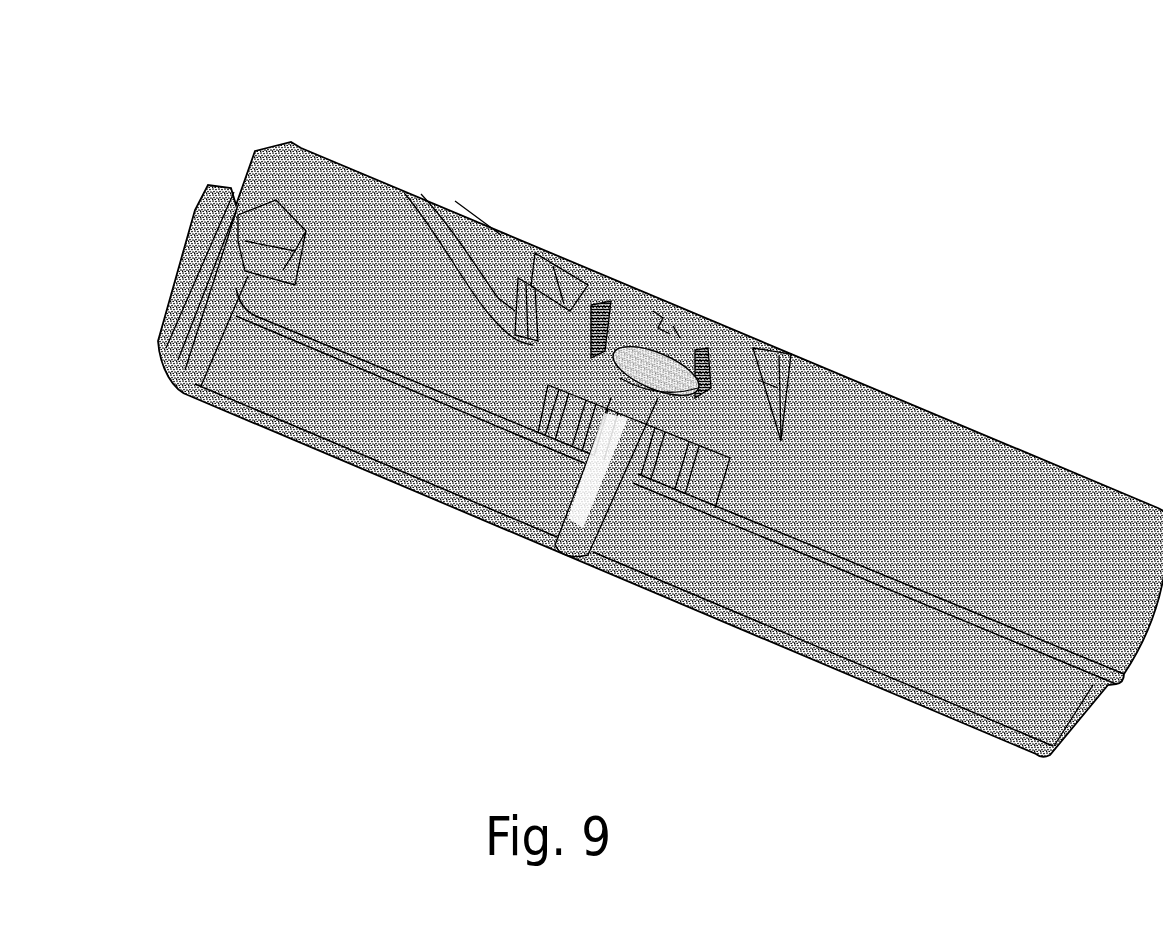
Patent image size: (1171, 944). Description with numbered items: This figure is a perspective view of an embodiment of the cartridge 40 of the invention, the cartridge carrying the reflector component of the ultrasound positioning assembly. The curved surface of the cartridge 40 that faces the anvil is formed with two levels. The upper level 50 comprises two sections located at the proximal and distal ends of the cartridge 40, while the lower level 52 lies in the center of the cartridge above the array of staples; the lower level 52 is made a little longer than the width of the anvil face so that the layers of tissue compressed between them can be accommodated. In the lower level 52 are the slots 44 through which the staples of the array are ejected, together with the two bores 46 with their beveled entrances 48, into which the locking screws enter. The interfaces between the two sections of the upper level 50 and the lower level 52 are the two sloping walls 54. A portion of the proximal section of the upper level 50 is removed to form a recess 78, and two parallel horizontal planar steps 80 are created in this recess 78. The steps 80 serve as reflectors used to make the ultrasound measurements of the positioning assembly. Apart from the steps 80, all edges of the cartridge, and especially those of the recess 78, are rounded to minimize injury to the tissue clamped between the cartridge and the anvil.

The cartridge 40 is at (937, 345).
The slots 44 is at (688, 340).
The bores 46 is at (573, 523).
The beveled entrances 48 is at (640, 372).
The upper level 50 is at (332, 172).
The lower level 52 is at (722, 342).
The sloping walls 54 is at (548, 270).
The recess 78 is at (485, 270).
The steps 80 is at (502, 297).